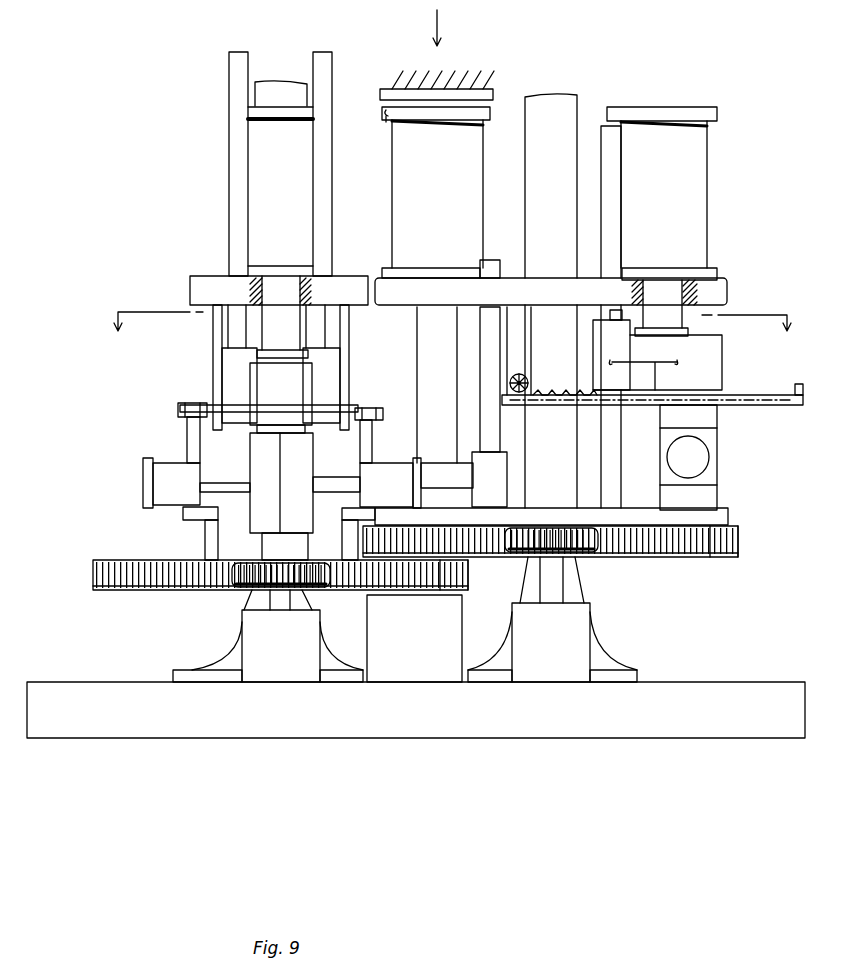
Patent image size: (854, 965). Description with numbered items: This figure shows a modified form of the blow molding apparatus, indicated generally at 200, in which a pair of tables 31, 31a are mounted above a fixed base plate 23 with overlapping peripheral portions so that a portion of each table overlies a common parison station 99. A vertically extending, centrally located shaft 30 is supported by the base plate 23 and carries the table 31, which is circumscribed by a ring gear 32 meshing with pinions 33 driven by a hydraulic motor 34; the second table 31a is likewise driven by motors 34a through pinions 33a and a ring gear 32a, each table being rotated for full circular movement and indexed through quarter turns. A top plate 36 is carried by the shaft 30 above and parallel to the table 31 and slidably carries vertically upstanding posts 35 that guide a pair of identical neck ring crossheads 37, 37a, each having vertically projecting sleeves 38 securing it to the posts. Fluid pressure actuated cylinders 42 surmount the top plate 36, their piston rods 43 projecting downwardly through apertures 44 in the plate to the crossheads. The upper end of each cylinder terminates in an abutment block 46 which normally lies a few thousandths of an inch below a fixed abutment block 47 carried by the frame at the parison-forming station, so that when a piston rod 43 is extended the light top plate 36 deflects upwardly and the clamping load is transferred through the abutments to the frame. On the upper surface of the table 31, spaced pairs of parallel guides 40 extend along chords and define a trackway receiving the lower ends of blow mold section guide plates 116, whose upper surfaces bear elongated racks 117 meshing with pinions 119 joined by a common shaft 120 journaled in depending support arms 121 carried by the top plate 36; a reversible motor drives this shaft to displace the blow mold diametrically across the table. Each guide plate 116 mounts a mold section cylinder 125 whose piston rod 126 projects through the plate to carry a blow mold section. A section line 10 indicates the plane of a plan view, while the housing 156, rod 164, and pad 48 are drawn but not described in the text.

The section line 10 is at (448, 336).
The modified apparatus 200 is at (455, 28).
The base plate 23 is at (528, 726).
The shaft 30 is at (264, 90).
The table 31 is at (155, 591).
The table 31a is at (628, 515).
The ring gear 32 is at (469, 576).
The ring gear 32a is at (740, 542).
The pinion 33 is at (300, 587).
The pinion 33a is at (575, 555).
The hydraulic motor 34 is at (294, 649).
The motor 34a is at (556, 649).
The post 35 is at (229, 183).
The top plate 36 is at (190, 292).
The neck ring crosshead 37 is at (703, 344).
The neck ring crosshead 37a is at (284, 394).
The sleeve 38 is at (222, 360).
The guide 40 is at (205, 547).
The fluid pressure actuated cylinder 42 is at (284, 207).
The piston rod 43 is at (268, 280).
The aperture 44 is at (300, 292).
The abutment block 46 is at (386, 118).
The fixed abutment block 47 is at (385, 93).
The pad 48 is at (382, 112).
The parison station 99 is at (418, 644).
The blow mold section guide plate 116 is at (716, 470).
The rack 117 is at (187, 404).
The pinion 119 is at (187, 428).
The shaft 120 is at (178, 413).
The support arm 121 is at (213, 338).
The mold section cylinder 125 is at (153, 500).
The piston rod 126 is at (210, 487).
The spindle housing 156 is at (280, 462).
The rod 164 is at (349, 340).